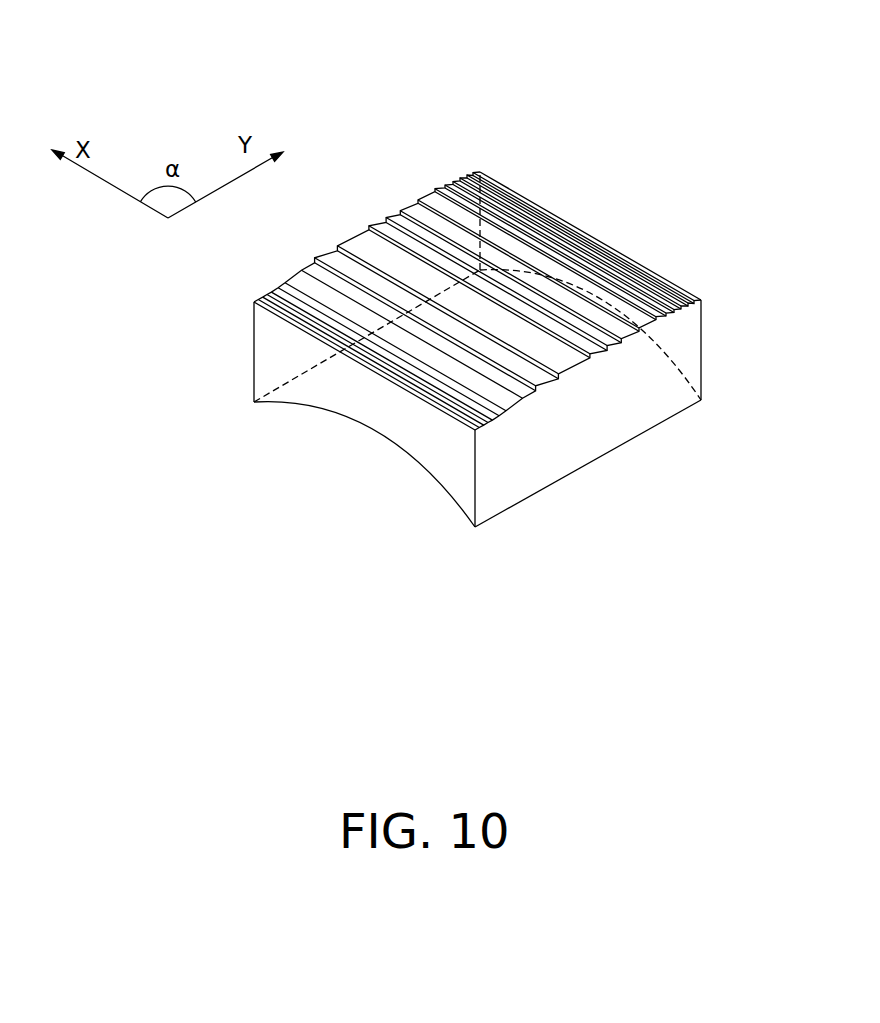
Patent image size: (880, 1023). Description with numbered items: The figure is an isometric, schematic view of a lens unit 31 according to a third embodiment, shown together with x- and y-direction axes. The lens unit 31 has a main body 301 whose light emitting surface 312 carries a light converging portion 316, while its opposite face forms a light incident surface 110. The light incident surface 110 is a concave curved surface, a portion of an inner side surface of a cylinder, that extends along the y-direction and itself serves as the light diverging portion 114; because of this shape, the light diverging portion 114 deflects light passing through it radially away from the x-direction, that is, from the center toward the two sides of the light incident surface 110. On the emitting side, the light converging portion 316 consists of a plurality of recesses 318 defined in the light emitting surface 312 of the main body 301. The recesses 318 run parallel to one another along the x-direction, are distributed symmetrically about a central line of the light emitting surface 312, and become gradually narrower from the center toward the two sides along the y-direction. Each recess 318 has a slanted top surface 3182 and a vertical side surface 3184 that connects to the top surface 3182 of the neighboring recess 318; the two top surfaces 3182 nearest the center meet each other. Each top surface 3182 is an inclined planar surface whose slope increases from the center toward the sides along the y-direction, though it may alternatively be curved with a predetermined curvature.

The lens unit 31 is at (345, 62).
The main body 301 is at (702, 342).
The light emitting surface 312 is at (615, 249).
The light converging portion 316 is at (318, 271).
The recess 318 is at (501, 210).
The top surface 3182 is at (423, 202).
The side surface 3184 is at (437, 197).
The light incident surface 110 is at (378, 438).
The light diverging portion 114 is at (432, 479).